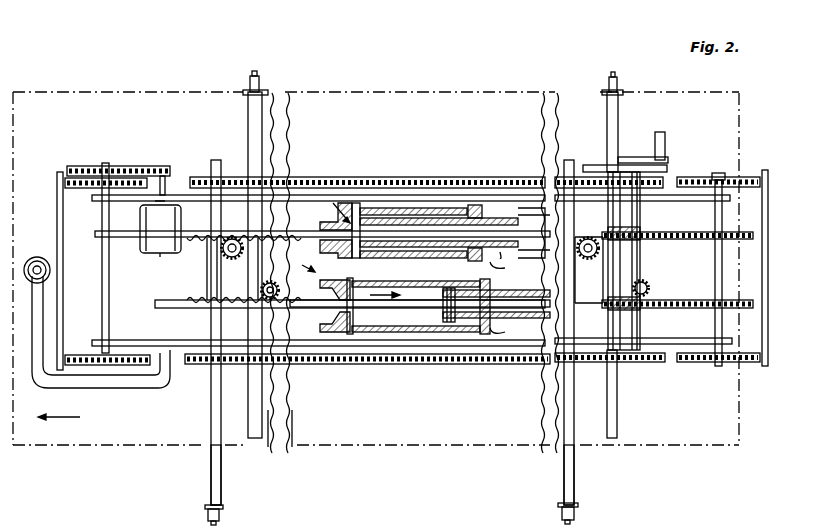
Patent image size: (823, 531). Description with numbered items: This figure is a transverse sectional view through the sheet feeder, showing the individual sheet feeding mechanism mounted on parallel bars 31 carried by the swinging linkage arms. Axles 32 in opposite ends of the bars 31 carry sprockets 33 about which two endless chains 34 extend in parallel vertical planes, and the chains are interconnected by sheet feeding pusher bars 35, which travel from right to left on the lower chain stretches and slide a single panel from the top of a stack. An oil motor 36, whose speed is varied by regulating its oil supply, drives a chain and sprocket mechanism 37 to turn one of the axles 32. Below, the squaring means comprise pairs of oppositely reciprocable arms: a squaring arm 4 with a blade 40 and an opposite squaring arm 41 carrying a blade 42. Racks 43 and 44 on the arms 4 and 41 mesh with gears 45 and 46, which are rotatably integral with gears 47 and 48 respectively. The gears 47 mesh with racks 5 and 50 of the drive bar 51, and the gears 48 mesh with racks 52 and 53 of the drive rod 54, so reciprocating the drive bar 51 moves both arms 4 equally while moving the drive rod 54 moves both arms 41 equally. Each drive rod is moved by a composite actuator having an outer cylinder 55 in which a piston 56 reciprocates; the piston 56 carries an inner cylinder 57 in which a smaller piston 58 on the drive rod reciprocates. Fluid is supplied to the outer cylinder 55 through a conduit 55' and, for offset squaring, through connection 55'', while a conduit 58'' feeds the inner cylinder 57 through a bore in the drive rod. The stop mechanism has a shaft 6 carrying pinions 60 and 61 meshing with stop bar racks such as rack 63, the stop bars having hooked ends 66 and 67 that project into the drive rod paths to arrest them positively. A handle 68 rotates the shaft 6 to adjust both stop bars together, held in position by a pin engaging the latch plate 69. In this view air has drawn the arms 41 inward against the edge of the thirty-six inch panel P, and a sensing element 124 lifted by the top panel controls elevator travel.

The squaring arm 4 is at (222, 492).
The rack of drive bar 51 5 is at (128, 238).
The shaft 6 is at (640, 217).
The bars 31 is at (97, 201).
The axles 32 is at (102, 266).
The sprockets 33 is at (130, 355).
The endless chains 34 is at (438, 187).
The sheet feeding pusher bars 35 is at (57, 230).
The oil motor 36 is at (158, 255).
The chain and sprocket mechanism 37 is at (122, 168).
The blade 40 is at (222, 513).
The squaring arm 41 is at (258, 108).
The blade 42 is at (247, 92).
The rack 43 is at (221, 400).
The rack 44 is at (275, 445).
The gear 45 is at (645, 270).
The gear 46 is at (278, 290).
The gear 47 is at (222, 254).
The gear 48 is at (324, 237).
The rack of drive bar 51 50 is at (589, 270).
The drive bar 51 is at (535, 233).
The rack of drive rod 54 52 is at (185, 300).
The rack of drive rod 54 53 is at (589, 270).
The drive rod 54 is at (340, 305).
The outer cylinder 55 is at (417, 266).
The conduit 55' is at (323, 244).
The connection 55'' is at (520, 300).
The piston 56 is at (357, 205).
The inner cylinder 57 is at (452, 222).
The piston 58 is at (455, 295).
The conduit 58'' is at (520, 252).
The pinion 60 is at (640, 305).
The pinion 61 is at (636, 236).
The rack 63 is at (690, 232).
The hooked end 66 is at (754, 304).
The hooked end 67 is at (757, 232).
The handle 68 is at (645, 158).
The latch plate 69 is at (598, 165).
The sensing element 124 is at (45, 266).
The panel P is at (398, 447).